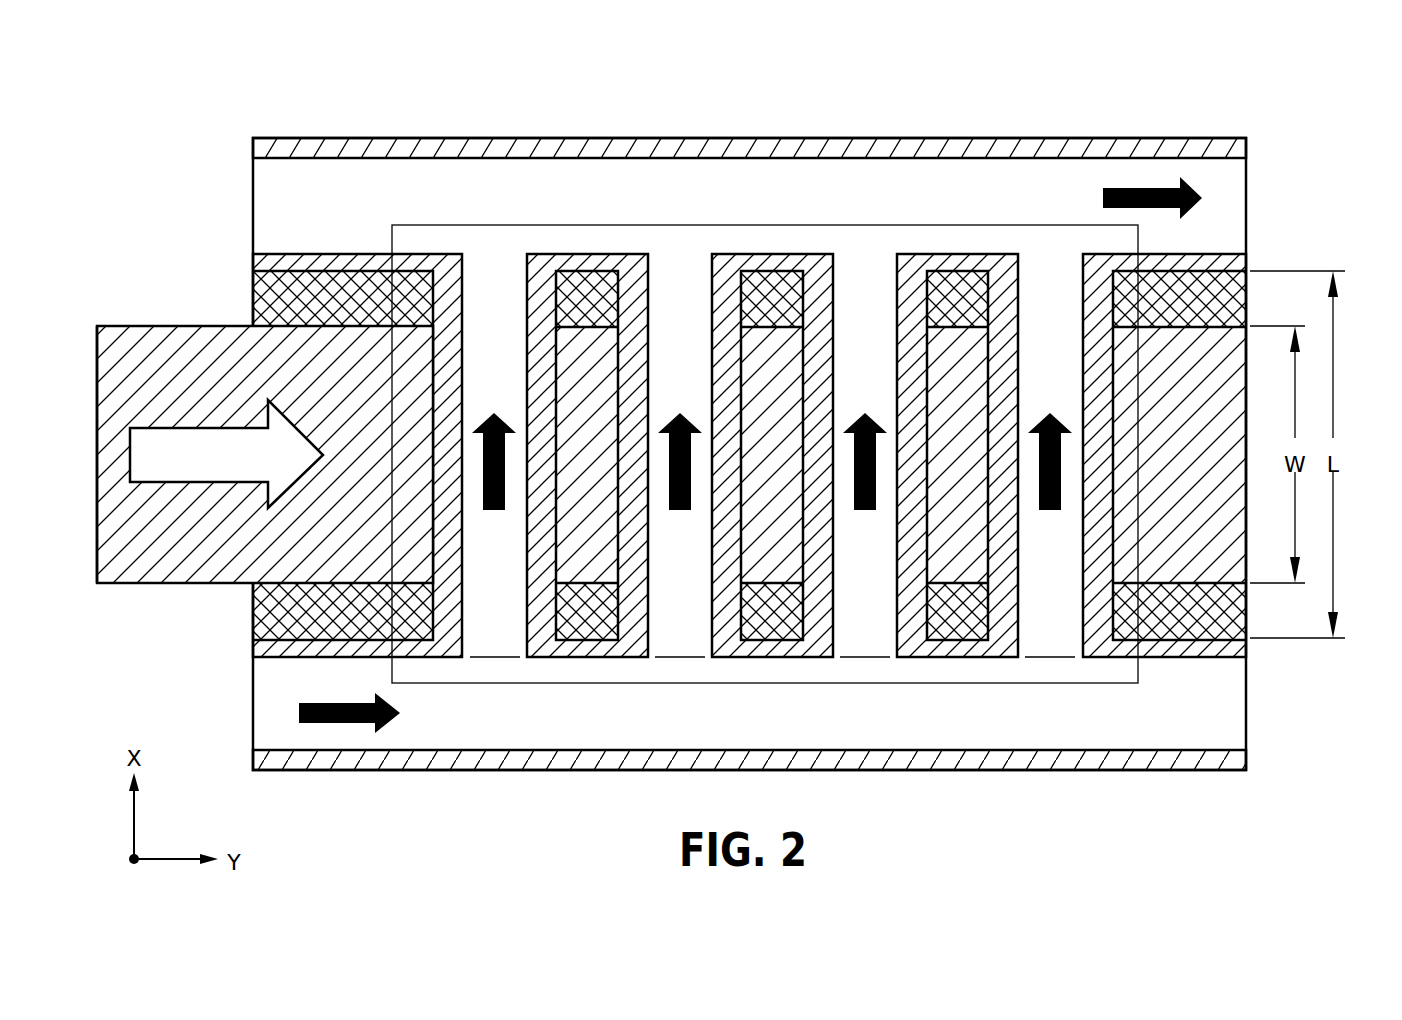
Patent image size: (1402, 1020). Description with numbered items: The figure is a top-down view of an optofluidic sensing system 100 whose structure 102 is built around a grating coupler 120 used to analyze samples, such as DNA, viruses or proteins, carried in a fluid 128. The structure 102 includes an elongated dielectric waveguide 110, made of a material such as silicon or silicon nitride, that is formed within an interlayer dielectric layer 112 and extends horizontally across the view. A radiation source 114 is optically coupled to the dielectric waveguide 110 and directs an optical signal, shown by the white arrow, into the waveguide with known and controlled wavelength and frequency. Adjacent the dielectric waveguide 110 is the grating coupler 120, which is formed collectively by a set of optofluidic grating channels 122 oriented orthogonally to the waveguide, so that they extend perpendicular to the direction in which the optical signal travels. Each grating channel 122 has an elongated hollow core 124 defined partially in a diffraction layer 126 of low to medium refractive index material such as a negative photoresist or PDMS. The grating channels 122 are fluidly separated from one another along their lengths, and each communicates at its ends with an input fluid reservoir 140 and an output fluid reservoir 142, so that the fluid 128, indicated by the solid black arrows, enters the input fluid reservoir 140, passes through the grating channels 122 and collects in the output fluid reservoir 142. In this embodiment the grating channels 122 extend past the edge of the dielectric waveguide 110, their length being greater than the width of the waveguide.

The optofluidic sensing system 100 is at (1245, 122).
The structure 102 is at (749, 454).
The dielectric waveguide 110 is at (287, 360).
The interlayer dielectric layer 112 is at (275, 616).
The radiation source 114 is at (132, 562).
The grating coupler 120 is at (710, 225).
The optofluidic grating channel 122 is at (497, 660).
The hollow core 124 is at (489, 285).
The diffraction layer 126 is at (447, 293).
The fluid 128 is at (348, 723).
The input fluid reservoir 140 is at (440, 728).
The output fluid reservoir 142 is at (452, 185).